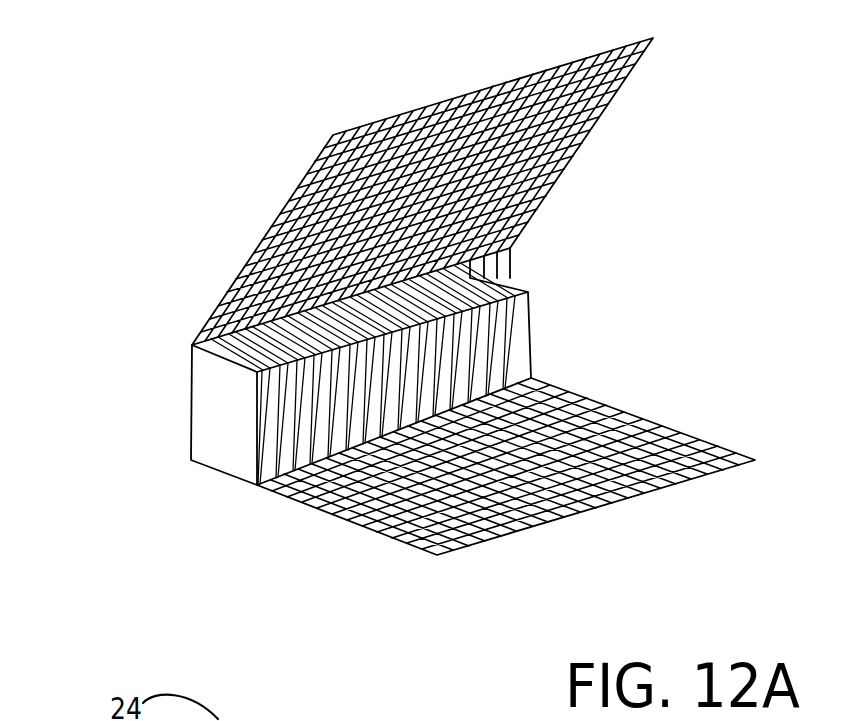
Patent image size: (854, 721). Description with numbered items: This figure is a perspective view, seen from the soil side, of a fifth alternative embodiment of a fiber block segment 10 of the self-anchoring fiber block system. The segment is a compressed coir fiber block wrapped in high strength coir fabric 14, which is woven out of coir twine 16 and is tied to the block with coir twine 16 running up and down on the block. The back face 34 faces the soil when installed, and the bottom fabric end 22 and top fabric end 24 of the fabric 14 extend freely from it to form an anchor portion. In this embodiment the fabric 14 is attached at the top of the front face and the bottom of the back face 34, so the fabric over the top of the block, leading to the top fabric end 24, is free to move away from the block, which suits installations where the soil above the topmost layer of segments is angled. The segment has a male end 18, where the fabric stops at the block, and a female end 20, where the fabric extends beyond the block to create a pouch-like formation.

The fiber block segment 10 is at (183, 280).
The high strength coir fabric 14 is at (500, 170).
The coir twine 16 is at (325, 410).
The male end 18 is at (138, 463).
The female end 20 is at (550, 317).
The bottom fabric end 22 is at (533, 523).
The top fabric end 24 is at (598, 50).
The back face 34 is at (447, 426).